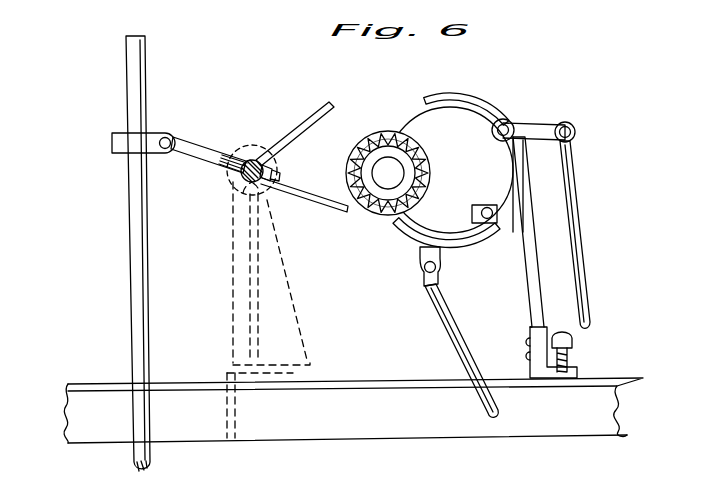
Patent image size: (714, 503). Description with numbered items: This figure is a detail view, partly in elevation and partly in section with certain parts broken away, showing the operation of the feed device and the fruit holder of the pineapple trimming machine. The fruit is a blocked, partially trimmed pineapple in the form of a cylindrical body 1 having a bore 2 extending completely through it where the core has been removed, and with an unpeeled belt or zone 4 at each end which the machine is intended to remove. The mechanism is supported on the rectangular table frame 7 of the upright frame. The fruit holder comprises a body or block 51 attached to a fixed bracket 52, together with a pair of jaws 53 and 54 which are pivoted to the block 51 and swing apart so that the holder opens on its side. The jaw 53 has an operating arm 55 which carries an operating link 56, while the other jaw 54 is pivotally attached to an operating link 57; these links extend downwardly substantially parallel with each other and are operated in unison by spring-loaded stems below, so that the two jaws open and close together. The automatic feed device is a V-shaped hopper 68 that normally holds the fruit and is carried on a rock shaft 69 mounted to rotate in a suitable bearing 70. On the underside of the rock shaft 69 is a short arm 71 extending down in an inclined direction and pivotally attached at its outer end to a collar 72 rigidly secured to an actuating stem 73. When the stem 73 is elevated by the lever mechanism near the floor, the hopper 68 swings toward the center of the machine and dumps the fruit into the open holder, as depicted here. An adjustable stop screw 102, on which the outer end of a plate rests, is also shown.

The cylindrical body 1 is at (390, 126).
The bore 2 is at (395, 172).
The zone 4 is at (427, 192).
The table frame 7 is at (93, 383).
The block 51 is at (505, 192).
The fixed bracket 52 is at (538, 233).
The jaw 53 is at (470, 101).
The jaw 54 is at (405, 240).
The operating arm 55 is at (535, 126).
The operating link 56 is at (578, 170).
The operating link 57 is at (458, 306).
The V-shaped hopper 68 is at (298, 124).
The rock shaft 69 is at (254, 146).
The bearing 70 is at (242, 272).
The short arm 71 is at (221, 165).
The collar 72 is at (120, 152).
The actuating stem 73 is at (132, 201).
The adjustable stop screw 102 is at (575, 343).